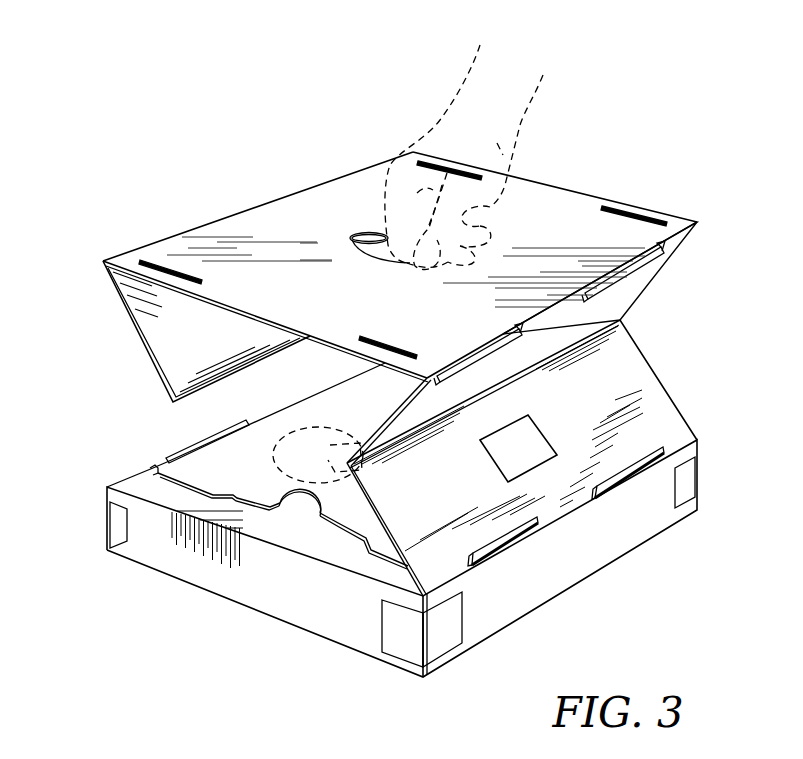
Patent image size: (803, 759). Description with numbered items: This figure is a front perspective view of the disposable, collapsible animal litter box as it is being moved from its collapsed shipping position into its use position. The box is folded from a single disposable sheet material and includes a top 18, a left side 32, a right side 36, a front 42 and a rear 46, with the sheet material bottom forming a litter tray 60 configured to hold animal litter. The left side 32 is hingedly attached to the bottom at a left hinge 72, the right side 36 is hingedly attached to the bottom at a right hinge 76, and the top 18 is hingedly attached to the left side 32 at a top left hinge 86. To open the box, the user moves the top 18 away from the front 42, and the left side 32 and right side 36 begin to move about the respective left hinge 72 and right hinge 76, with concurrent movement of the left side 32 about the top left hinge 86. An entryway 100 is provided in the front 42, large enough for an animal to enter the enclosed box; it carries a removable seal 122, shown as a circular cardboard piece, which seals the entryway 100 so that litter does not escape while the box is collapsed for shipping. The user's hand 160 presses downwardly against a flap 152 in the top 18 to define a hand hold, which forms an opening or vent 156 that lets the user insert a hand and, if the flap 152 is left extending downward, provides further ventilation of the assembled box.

The top 18 is at (568, 212).
The left side 32 is at (153, 318).
The right side 36 is at (630, 377).
The front 42 is at (152, 487).
The rear 46 is at (352, 528).
The litter tray 60 is at (195, 553).
The left hinge 72 is at (143, 473).
The right hinge 76 is at (463, 578).
The top left hinge 86 is at (207, 224).
The entryway 100 is at (290, 450).
The removable seal 122 is at (310, 483).
The flap 152 is at (377, 233).
The vent 156 is at (357, 232).
The hand 160 is at (522, 113).